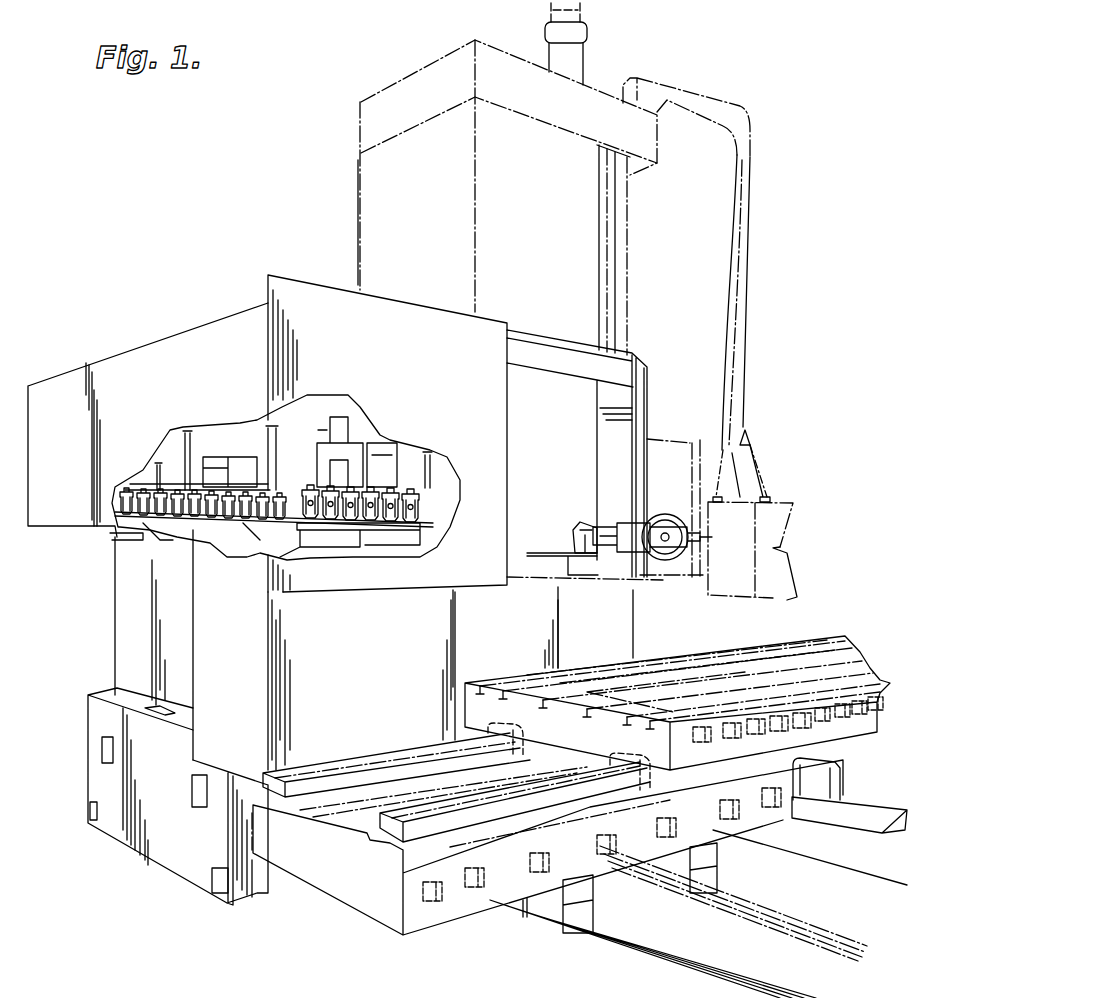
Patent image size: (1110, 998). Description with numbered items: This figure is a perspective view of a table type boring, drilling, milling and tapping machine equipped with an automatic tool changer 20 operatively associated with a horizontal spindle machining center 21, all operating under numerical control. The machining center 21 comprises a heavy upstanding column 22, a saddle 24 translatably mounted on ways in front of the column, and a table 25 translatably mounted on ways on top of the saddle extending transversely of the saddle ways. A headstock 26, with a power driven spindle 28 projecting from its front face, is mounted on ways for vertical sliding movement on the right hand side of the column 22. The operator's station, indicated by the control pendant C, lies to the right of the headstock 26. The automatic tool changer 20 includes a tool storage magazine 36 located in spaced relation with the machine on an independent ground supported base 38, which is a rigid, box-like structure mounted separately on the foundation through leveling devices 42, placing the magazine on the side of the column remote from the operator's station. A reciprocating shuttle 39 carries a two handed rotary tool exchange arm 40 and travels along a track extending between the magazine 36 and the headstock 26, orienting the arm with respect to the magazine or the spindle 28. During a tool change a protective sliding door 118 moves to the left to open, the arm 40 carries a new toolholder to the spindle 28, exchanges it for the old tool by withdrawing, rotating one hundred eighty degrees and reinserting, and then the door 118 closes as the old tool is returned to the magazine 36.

The automatic tool changer 20 is at (178, 360).
The horizontal spindle machining center 21 is at (352, 147).
The column 22 is at (358, 232).
The saddle 24 is at (335, 882).
The table 25 is at (847, 637).
The headstock 26 is at (690, 447).
The spindle 28 is at (692, 515).
The tool storage magazine 36 is at (222, 447).
The base 38 is at (120, 605).
The shuttle 39 is at (580, 522).
The tool exchange arm 40 is at (630, 525).
The leveling devices 42 is at (88, 822).
The protective sliding door 118 is at (353, 585).
The control pendant C is at (797, 512).